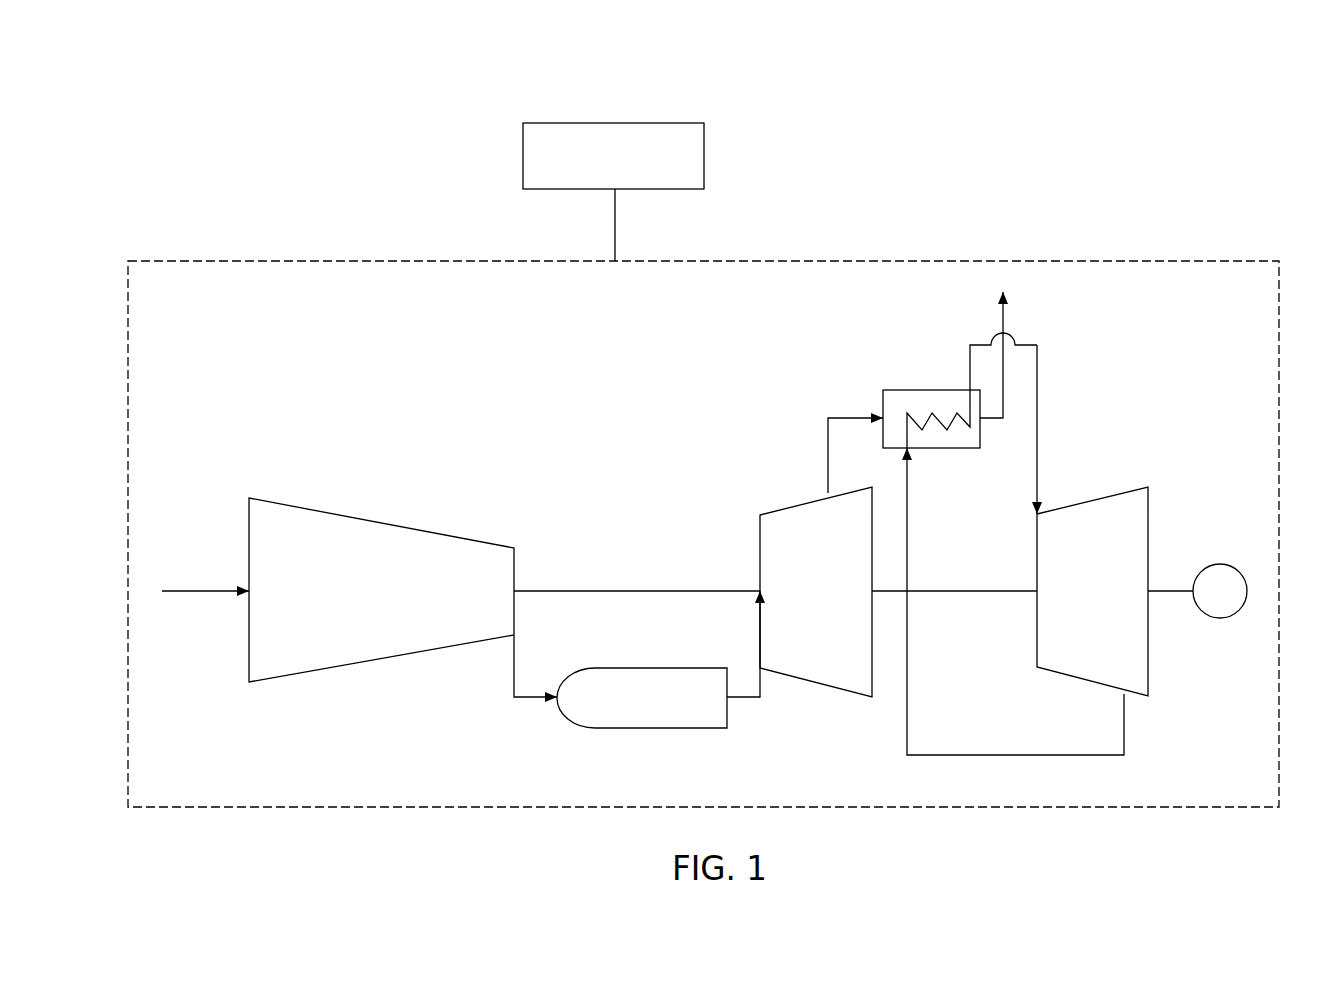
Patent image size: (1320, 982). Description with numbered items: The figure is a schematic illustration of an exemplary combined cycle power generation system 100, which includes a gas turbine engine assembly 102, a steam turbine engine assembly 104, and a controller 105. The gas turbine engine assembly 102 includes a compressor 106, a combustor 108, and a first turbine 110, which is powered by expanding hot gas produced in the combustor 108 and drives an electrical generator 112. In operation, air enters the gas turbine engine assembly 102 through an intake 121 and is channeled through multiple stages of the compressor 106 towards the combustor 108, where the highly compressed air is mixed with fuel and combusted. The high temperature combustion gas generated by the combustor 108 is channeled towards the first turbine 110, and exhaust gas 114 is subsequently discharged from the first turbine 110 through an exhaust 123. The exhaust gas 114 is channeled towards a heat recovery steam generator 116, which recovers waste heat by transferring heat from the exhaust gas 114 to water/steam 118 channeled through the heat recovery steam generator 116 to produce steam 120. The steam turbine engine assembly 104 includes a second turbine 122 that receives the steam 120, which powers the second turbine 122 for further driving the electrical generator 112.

The combined cycle power generation system 100 is at (993, 92).
The gas turbine engine assembly 102 is at (293, 373).
The steam turbine engine assembly 104 is at (1103, 380).
The controller 105 is at (704, 157).
The compressor 106 is at (380, 522).
The combustor 108 is at (662, 668).
The first turbine 110 is at (760, 540).
The electrical generator 112 is at (1218, 564).
The exhaust gas 114 is at (845, 418).
The heat recovery steam generator 116 is at (930, 390).
The water/steam 118 is at (977, 755).
The steam 120 is at (1037, 395).
The intake 121 is at (240, 605).
The second turbine 122 is at (1093, 497).
The exhaust 123 is at (823, 492).